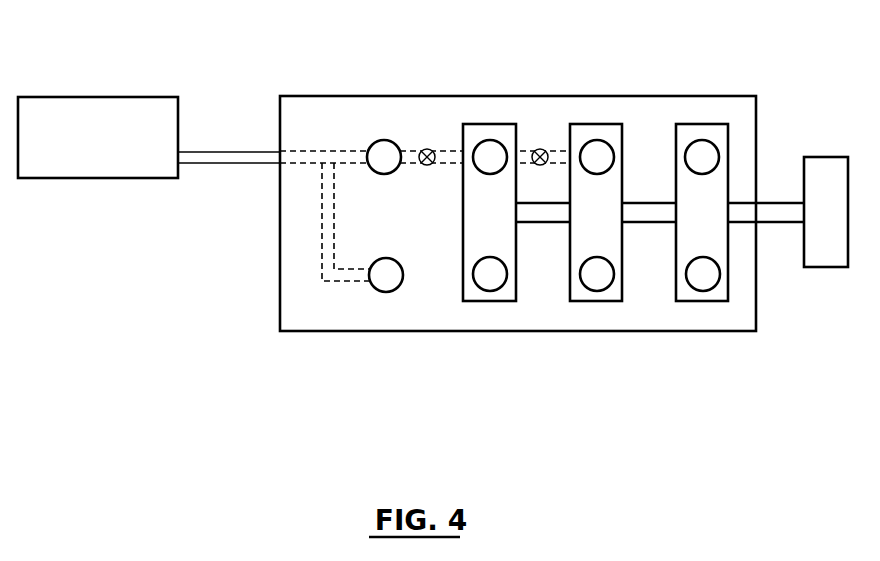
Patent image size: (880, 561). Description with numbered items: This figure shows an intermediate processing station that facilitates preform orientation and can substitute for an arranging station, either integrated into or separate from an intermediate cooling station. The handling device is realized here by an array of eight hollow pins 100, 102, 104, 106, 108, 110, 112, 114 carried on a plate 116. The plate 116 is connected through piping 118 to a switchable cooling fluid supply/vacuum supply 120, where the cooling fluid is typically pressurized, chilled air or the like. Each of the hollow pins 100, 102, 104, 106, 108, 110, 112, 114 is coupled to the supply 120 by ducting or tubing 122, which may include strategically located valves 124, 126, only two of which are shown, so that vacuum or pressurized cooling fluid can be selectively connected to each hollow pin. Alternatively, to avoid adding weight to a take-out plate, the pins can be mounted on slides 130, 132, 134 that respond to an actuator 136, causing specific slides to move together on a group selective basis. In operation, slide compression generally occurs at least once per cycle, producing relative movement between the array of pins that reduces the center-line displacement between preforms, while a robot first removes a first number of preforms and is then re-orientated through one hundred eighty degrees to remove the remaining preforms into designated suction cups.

The hollow pin 100 is at (597, 140).
The hollow pin 102 is at (702, 140).
The hollow pin 104 is at (700, 291).
The hollow pin 106 is at (592, 291).
The hollow pin 108 is at (484, 291).
The hollow pin 110 is at (384, 292).
The hollow pin 112 is at (382, 140).
The hollow pin 114 is at (490, 140).
The plate 116 is at (286, 292).
The piping 118 is at (225, 157).
The switchable cooling fluid supply/vacuum supply 120 is at (108, 103).
The ducting or tubing 122 is at (322, 222).
The valve 124 is at (428, 148).
The valve 126 is at (540, 148).
The slide 130 is at (516, 258).
The slide 132 is at (622, 258).
The slide 134 is at (672, 157).
The actuator 136 is at (820, 248).